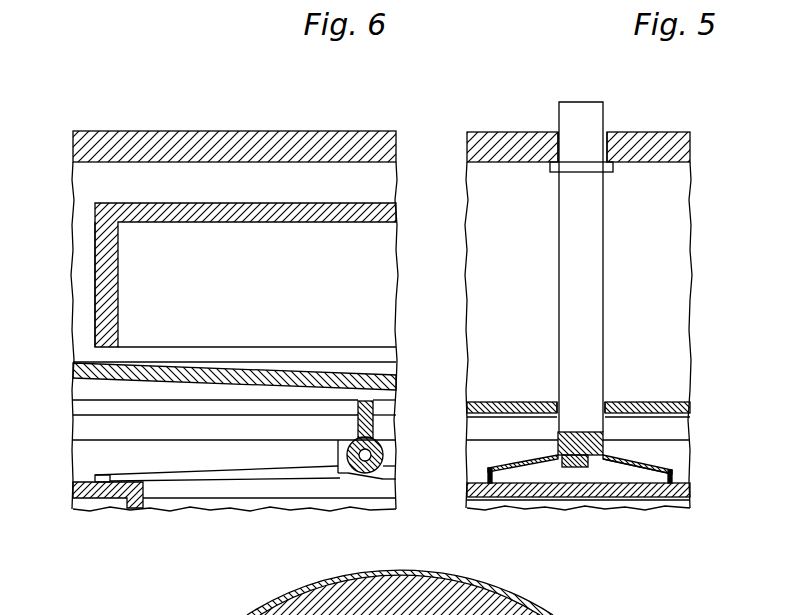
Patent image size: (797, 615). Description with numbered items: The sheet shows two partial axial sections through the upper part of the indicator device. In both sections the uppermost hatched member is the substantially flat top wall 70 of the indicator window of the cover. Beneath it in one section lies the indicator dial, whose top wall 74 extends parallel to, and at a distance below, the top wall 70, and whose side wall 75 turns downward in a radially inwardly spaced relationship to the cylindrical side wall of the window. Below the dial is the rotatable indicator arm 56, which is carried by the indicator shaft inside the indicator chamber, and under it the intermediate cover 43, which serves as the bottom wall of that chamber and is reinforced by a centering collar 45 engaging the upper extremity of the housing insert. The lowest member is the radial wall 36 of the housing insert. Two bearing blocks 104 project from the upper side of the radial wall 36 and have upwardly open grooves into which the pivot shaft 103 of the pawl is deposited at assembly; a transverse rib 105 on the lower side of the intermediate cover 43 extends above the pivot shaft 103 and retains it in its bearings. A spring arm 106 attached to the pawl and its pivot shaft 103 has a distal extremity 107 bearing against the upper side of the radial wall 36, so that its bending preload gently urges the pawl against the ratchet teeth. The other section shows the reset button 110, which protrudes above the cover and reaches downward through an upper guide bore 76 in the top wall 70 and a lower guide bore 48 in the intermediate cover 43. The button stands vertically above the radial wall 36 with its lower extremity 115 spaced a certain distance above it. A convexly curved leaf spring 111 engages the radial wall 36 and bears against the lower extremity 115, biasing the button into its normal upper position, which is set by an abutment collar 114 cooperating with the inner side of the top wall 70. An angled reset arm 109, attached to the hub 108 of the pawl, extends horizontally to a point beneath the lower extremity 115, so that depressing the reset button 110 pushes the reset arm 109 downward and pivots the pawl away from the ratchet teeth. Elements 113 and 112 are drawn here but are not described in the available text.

In FIG. 6, the top wall 70 is at (117, 142).
In FIG. 5, the top wall 70 is at (485, 143).
In FIG. 6, the top wall 74 is at (196, 210).
In FIG. 6, the side wall 75 is at (108, 253).
In FIG. 6, the indicator arm 56 is at (80, 371).
In FIG. 6, the intermediate cover 43 is at (97, 409).
In FIG. 5, the intermediate cover 43 is at (690, 408).
In FIG. 6, the centering collar 45 is at (117, 428).
In FIG. 6, the transverse rib 105 is at (370, 413).
In FIG. 6, the pivot shaft 103 is at (382, 441).
In FIG. 6, the hub 108 is at (371, 459).
In FIG. 6, the spring arm 106 is at (232, 476).
In FIG. 6, the distal extremity 107 is at (97, 477).
In FIG. 6, the radial wall 36 is at (73, 492).
In FIG. 5, the radial wall 36 is at (690, 494).
In FIG. 6, the bearing blocks 104 is at (388, 473).
In FIG. 5, the upper guide bore 76 is at (557, 135).
In FIG. 5, the reset button 110 is at (580, 217).
In FIG. 5, the abutment collar 114 is at (603, 165).
In FIG. 5, the lower guide bore 48 is at (612, 398).
In FIG. 5, the lower extremity 115 is at (602, 445).
In FIG. 5, the reset arm 109 is at (586, 467).
In FIG. 5, the leaf spring 111 is at (662, 468).
In FIG. 5, the spring arm tab 113 is at (672, 477).
In FIG. 5, the spring arm 112 is at (626, 465).